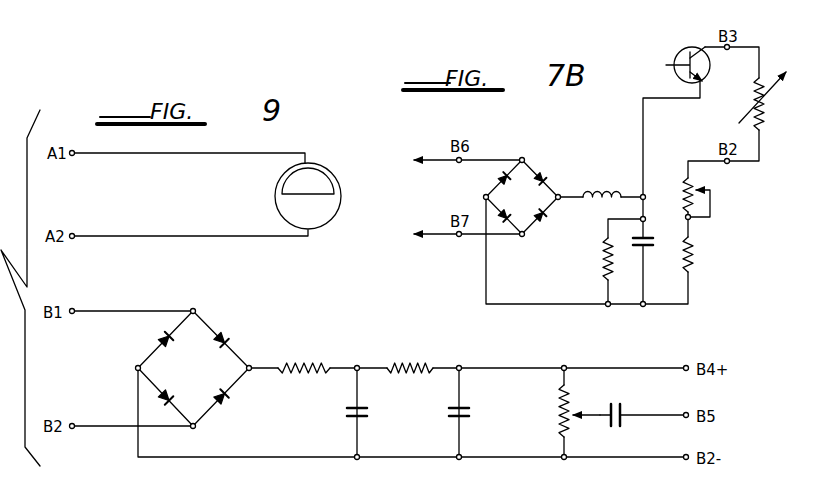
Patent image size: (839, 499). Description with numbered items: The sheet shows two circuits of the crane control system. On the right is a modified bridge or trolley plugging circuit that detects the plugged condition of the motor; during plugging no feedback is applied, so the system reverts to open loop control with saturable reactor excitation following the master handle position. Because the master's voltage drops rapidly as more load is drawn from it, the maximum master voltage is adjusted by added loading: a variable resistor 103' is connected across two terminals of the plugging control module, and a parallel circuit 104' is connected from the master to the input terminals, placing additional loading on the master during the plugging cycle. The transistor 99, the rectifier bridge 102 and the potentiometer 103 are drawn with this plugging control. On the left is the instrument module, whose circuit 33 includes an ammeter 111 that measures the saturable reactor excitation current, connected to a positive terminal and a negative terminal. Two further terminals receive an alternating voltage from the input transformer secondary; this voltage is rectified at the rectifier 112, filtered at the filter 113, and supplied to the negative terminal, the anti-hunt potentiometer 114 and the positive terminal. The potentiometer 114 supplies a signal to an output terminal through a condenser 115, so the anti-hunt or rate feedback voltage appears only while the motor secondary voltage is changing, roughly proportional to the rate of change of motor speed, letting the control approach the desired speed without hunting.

In FIG. 9, the power supply circuit 33 is at (120, 442).
In FIG. 9, the ammeter 111 is at (337, 171).
In FIG. 9, the rectifier 112 is at (211, 322).
In FIG. 9, the filter 113 is at (413, 362).
In FIG. 9, the anti-hunt potentiometer 114 is at (558, 408).
In FIG. 9, the condenser 115 is at (623, 408).
In FIG. 7B, the rectifier bridge 102 is at (534, 166).
In FIG. 7B, the parallel circuit 104' is at (468, 197).
In FIG. 7B, the transistor 99 is at (702, 74).
In FIG. 7B, the variable resistor 103' is at (767, 130).
In FIG. 7B, the potentiometer 103 is at (720, 225).